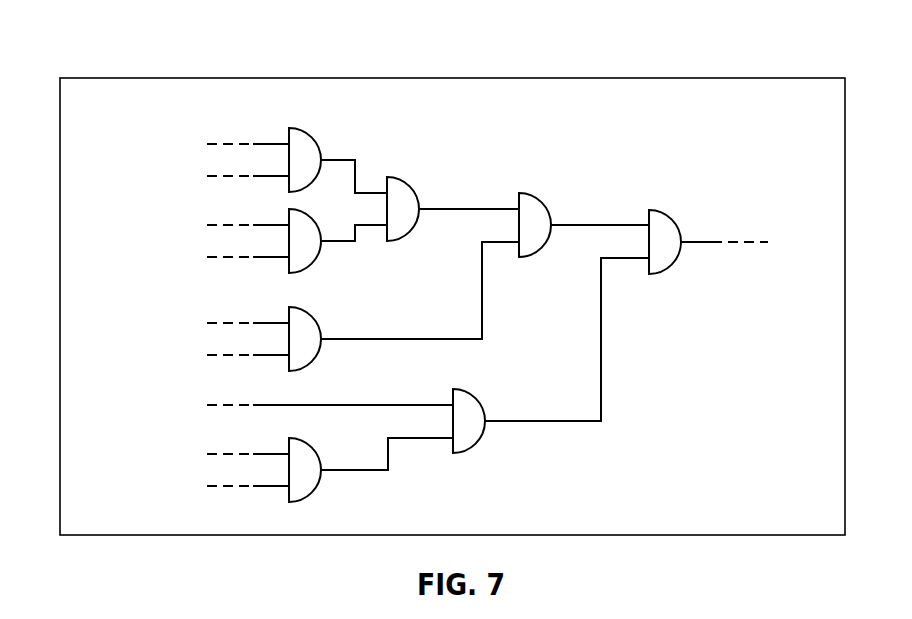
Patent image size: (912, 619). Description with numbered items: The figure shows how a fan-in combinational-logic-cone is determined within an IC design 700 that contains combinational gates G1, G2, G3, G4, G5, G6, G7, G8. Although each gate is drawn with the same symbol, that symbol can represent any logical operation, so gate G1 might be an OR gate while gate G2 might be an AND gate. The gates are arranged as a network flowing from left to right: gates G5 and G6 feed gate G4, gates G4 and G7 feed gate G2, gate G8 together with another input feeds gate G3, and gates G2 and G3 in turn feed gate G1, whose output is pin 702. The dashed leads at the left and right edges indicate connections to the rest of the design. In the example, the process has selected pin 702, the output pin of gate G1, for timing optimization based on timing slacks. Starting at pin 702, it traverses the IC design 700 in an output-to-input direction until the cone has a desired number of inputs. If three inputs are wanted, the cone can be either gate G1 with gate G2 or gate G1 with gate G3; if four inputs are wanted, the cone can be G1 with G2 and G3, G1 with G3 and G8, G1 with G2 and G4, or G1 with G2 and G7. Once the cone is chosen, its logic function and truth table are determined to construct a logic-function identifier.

The IC design 700 is at (193, 78).
The pin 702 is at (724, 214).
The combinational gate G1 is at (665, 242).
The combinational gate G2 is at (535, 225).
The combinational gate G3 is at (469, 421).
The combinational gate G4 is at (403, 209).
The combinational gate G5 is at (305, 160).
The combinational gate G6 is at (305, 241).
The combinational gate G7 is at (305, 339).
The combinational gate G8 is at (305, 470).